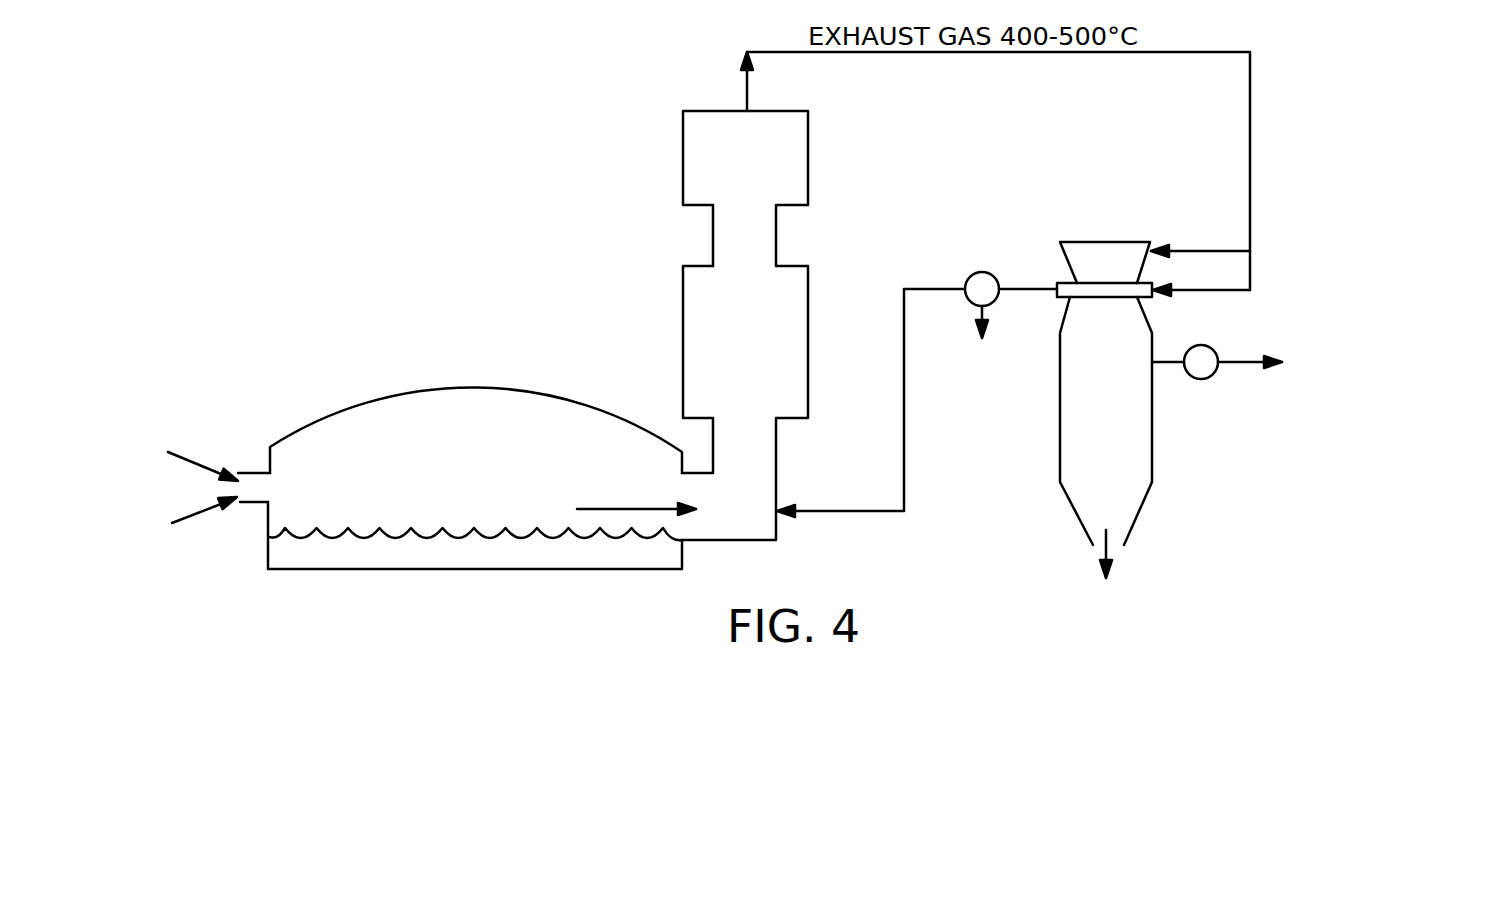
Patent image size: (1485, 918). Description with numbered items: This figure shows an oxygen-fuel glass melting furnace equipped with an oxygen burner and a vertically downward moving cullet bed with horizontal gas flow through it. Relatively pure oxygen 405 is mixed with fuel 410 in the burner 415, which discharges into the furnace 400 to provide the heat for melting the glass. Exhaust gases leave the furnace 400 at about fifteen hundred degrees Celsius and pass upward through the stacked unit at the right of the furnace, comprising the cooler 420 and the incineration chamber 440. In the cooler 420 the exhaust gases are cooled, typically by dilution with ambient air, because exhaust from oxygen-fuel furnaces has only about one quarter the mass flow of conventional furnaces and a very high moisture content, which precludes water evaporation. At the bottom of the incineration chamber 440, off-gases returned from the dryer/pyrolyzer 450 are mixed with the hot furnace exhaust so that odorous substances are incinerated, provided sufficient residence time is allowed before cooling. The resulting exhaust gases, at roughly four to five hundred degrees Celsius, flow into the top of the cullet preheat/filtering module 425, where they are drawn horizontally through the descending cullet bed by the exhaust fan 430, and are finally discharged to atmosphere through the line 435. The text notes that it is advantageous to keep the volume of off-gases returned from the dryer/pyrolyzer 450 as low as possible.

The furnace 400 is at (435, 387).
The oxygen 405 is at (205, 467).
The fuel 410 is at (193, 517).
The burner 415 is at (255, 502).
The cooler 420 is at (683, 163).
The incineration chamber 440 is at (683, 342).
The cullet preheat/filtering module 425 is at (1067, 398).
The exhaust fan 430 is at (1212, 347).
The line 435 is at (1217, 367).
The dryer/pyrolyzer 450 is at (843, 512).